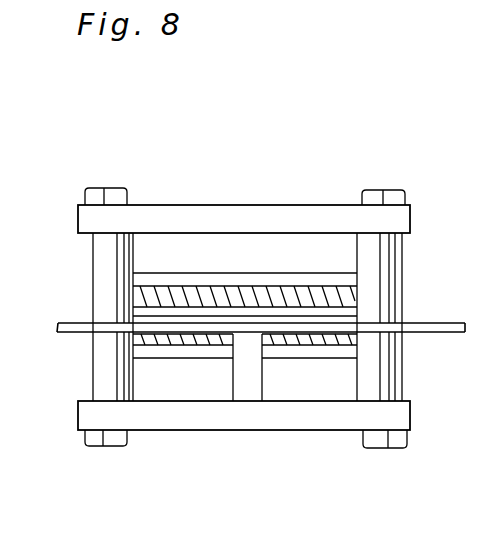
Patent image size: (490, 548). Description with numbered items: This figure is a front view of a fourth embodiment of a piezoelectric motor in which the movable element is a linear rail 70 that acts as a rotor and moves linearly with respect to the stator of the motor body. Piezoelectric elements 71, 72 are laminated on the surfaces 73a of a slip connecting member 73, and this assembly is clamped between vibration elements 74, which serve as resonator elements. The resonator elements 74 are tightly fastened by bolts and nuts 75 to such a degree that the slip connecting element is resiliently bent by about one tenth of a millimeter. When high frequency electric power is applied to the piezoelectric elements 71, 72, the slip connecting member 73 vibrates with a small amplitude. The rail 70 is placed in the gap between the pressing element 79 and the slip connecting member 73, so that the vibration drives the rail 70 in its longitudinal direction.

The linear rail 70 is at (73, 329).
The piezoelectric element 71 is at (340, 253).
The piezoelectric element 72 is at (343, 383).
The slip connecting member 73 is at (148, 313).
The surface of slip connecting member 73a is at (148, 282).
The vibration element 74 is at (238, 207).
The nut 75 is at (103, 192).
The pressing element 79 is at (248, 385).